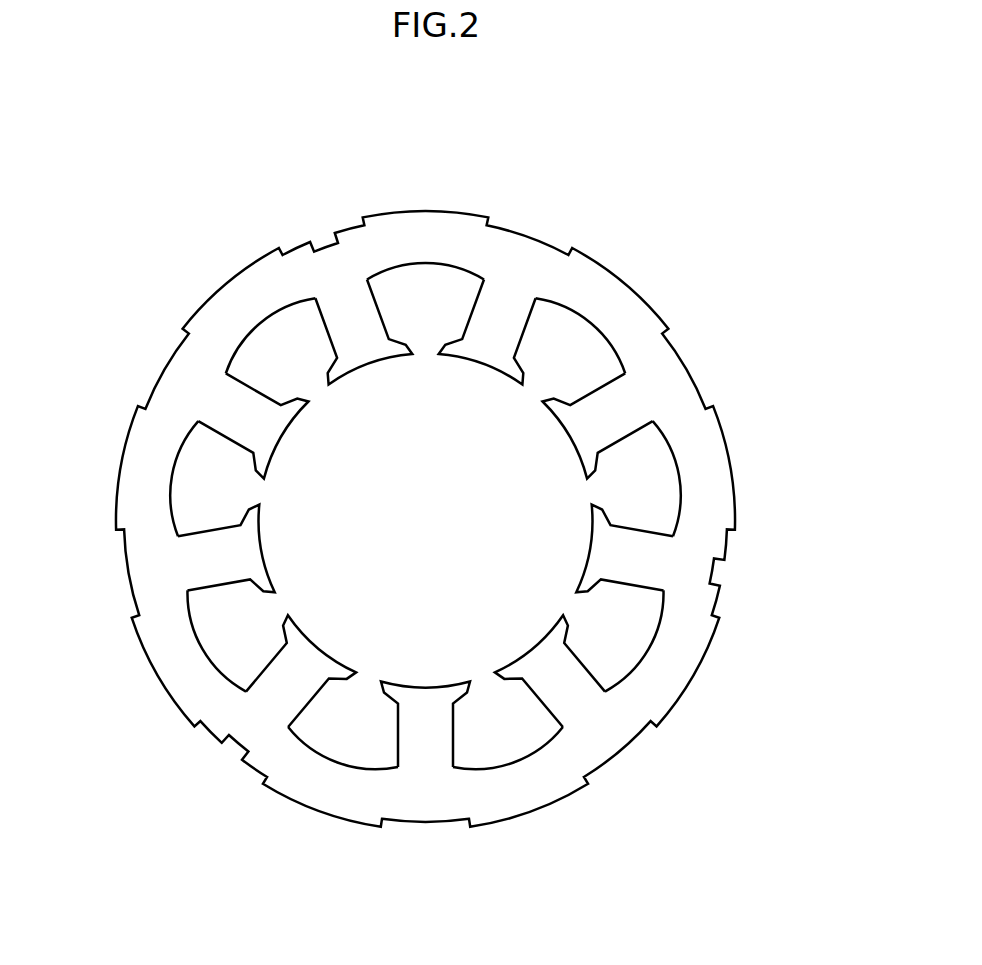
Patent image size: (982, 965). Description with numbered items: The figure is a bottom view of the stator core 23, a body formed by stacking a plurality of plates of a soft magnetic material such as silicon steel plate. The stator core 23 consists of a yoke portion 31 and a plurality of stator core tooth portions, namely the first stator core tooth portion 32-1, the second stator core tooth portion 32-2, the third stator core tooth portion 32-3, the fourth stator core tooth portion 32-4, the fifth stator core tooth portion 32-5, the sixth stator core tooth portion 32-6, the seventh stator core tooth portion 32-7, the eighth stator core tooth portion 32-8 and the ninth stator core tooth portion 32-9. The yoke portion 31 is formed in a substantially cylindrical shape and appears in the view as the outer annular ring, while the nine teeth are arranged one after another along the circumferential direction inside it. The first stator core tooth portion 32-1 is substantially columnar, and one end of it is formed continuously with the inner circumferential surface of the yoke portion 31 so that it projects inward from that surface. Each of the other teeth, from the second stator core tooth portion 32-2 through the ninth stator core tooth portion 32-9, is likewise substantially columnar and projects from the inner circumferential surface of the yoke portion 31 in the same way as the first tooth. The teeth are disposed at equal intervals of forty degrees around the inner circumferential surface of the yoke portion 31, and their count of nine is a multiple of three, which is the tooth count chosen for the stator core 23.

The stator core 23 is at (690, 146).
The yoke portion 31 is at (625, 280).
The first stator core tooth portion 32-1 is at (377, 315).
The second stator core tooth portion 32-2 is at (470, 312).
The third stator core tooth portion 32-3 is at (618, 377).
The fourth stator core tooth portion 32-4 is at (665, 535).
The fifth stator core tooth portion 32-5 is at (587, 674).
The sixth stator core tooth portion 32-6 is at (453, 737).
The seventh stator core tooth portion 32-7 is at (263, 671).
The eighth stator core tooth portion 32-8 is at (180, 536).
The ninth stator core tooth portion 32-9 is at (228, 375).